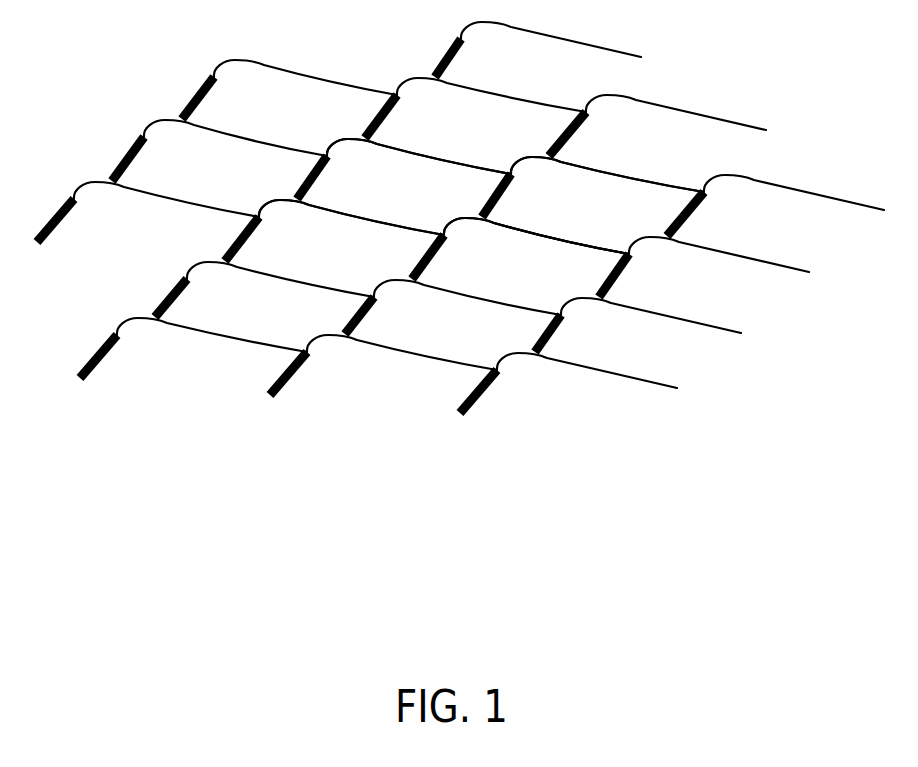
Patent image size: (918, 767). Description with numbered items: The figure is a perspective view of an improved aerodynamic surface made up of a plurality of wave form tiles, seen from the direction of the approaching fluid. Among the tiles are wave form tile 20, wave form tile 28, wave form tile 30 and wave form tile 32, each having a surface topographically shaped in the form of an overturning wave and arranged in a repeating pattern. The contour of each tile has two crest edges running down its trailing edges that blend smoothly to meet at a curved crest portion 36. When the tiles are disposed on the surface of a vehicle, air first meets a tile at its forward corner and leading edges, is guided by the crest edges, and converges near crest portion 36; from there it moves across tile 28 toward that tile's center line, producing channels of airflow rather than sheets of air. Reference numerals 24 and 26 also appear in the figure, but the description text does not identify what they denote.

The wave form tile 20 is at (558, 287).
The warp yarn 24 is at (417, 244).
The weft yarn 26 is at (573, 231).
The wave form tile 28 is at (430, 213).
The wave form tile 30 is at (553, 195).
The wave form tile 32 is at (312, 241).
The crest portion 36 is at (488, 283).